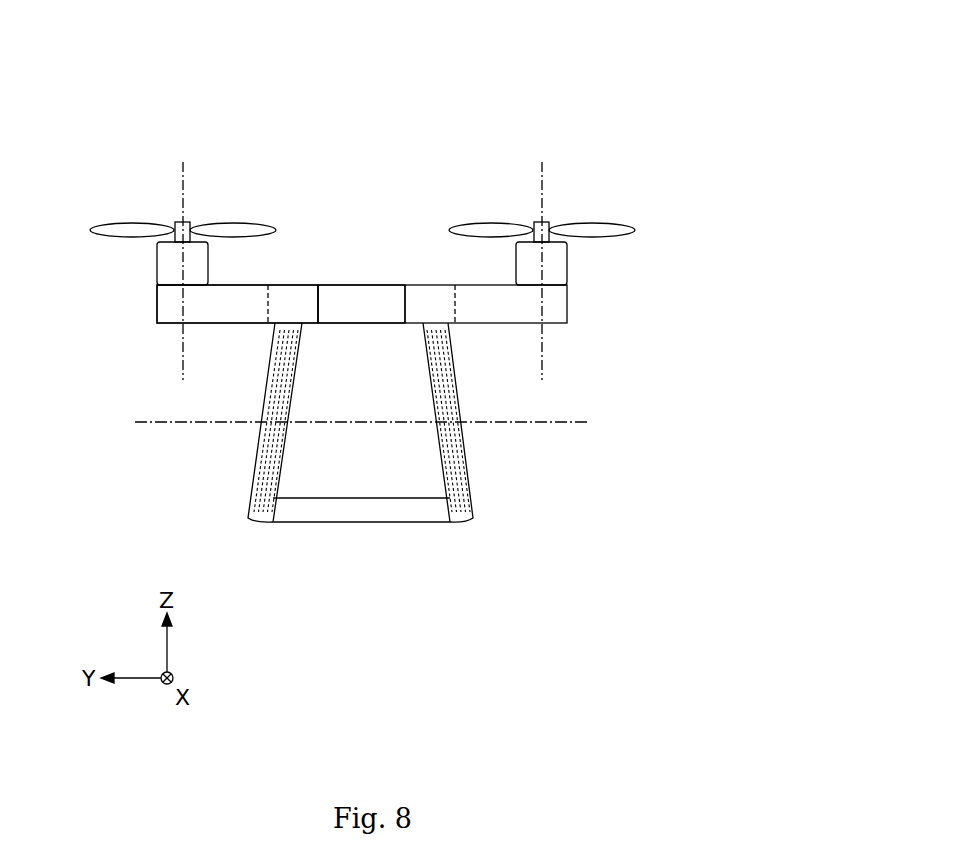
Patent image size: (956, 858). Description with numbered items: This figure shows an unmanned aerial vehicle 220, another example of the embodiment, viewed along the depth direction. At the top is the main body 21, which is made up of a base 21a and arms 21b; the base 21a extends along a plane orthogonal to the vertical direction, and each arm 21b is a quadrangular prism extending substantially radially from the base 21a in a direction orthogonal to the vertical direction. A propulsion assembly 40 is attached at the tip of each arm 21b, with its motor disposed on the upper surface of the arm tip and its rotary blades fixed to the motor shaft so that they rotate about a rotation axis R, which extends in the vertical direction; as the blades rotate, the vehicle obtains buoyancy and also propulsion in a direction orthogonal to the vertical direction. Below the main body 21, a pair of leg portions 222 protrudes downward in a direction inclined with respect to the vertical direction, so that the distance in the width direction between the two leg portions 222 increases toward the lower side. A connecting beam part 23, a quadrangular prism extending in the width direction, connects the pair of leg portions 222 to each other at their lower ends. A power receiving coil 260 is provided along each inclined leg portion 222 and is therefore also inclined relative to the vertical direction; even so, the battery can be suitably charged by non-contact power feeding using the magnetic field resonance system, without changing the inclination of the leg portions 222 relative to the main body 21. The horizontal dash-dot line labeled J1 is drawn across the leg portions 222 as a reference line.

The unmanned aerial vehicle 220 is at (492, 118).
The propulsion assembly 40 is at (208, 206).
The rotation axis R is at (185, 176).
The main body 21 is at (390, 217).
The base 21a is at (362, 300).
The arm 21b is at (242, 302).
The leg portion 222 is at (256, 458).
The power receiving coil 260 is at (292, 380).
The connecting beam part 23 is at (360, 512).
The reference line J1 is at (565, 423).